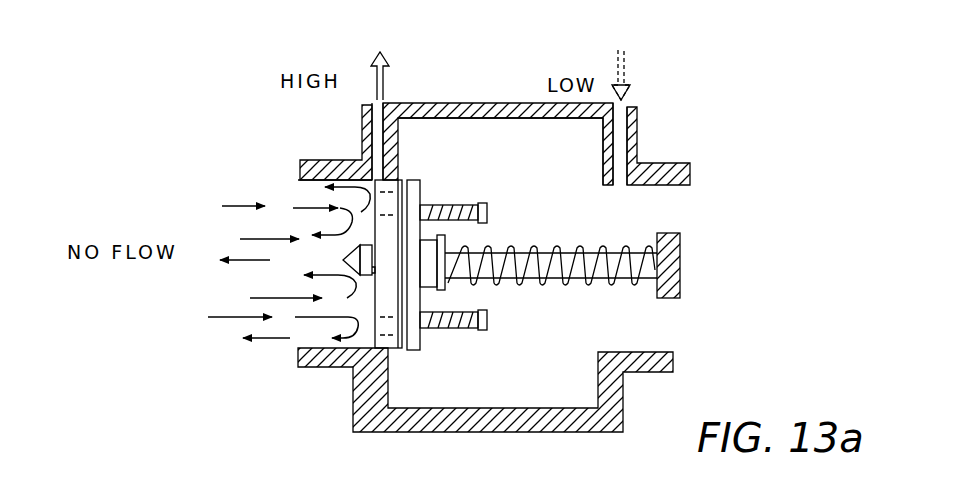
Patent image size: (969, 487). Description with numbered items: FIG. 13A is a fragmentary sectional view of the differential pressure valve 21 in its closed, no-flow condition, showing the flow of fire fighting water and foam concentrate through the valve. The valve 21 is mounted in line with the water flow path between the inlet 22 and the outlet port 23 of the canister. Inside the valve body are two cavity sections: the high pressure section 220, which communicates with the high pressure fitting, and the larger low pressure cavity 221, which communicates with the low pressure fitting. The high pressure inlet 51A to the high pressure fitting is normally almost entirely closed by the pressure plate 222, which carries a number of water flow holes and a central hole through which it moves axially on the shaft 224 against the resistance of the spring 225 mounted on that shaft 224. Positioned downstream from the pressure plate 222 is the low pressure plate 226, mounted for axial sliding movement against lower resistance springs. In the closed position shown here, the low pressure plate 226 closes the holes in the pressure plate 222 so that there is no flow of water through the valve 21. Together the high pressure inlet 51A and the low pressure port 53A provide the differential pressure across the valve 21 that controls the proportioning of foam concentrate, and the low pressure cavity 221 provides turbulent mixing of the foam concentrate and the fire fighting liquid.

The differential pressure valve 21 is at (512, 99).
The inlet 22 is at (330, 160).
The outlet port 23 is at (662, 165).
The high pressure inlet 51A is at (386, 99).
The low pressure port 53A is at (627, 102).
The high pressure section 220 is at (299, 186).
The low pressure cavity 221 is at (443, 137).
The pressure plate 222 is at (391, 335).
The shaft 224 is at (557, 273).
The spring 225 is at (538, 252).
The low pressure plate 226 is at (413, 190).